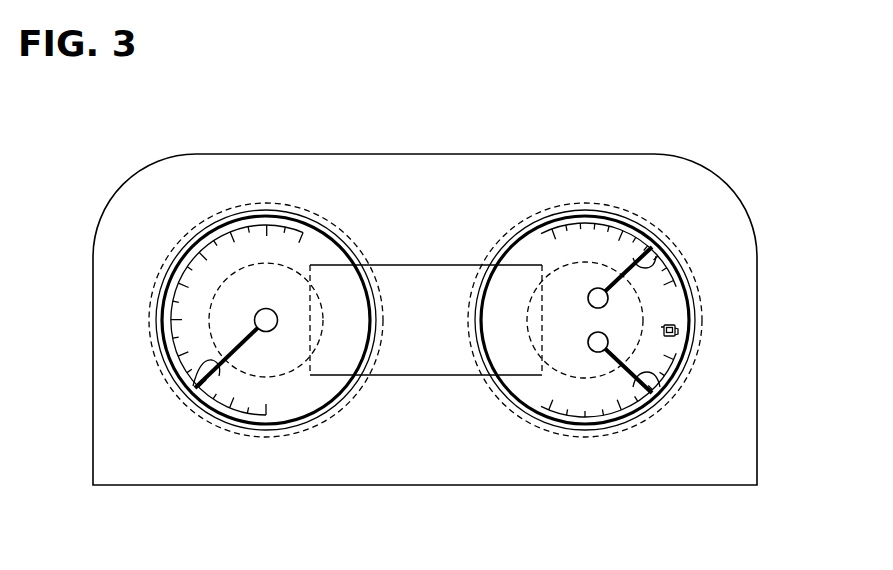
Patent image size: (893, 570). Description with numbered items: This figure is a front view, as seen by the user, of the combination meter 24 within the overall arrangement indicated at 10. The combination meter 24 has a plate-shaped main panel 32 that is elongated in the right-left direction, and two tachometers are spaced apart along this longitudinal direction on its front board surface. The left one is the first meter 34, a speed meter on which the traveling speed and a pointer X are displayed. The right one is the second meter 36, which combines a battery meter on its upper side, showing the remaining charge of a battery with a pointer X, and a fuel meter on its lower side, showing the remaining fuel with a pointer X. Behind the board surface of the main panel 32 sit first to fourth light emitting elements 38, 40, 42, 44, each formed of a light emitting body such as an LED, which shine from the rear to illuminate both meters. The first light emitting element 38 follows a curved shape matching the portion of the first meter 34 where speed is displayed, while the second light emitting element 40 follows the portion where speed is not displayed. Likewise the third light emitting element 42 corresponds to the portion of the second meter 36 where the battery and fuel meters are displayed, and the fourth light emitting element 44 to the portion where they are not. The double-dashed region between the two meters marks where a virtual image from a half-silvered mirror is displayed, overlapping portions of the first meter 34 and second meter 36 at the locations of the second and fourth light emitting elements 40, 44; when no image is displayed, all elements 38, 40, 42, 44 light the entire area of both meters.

The meter device 10 is at (753, 127).
The combination meter 24 is at (546, 153).
The main panel 32 is at (745, 447).
The first meter 34 is at (212, 369).
The second meter 36 is at (640, 369).
The first light emitting element 38 is at (276, 437).
The second light emitting element 40 is at (345, 420).
The third light emitting element 42 is at (575, 438).
The fourth light emitting element 44 is at (505, 408).
The pointer X is at (188, 385).